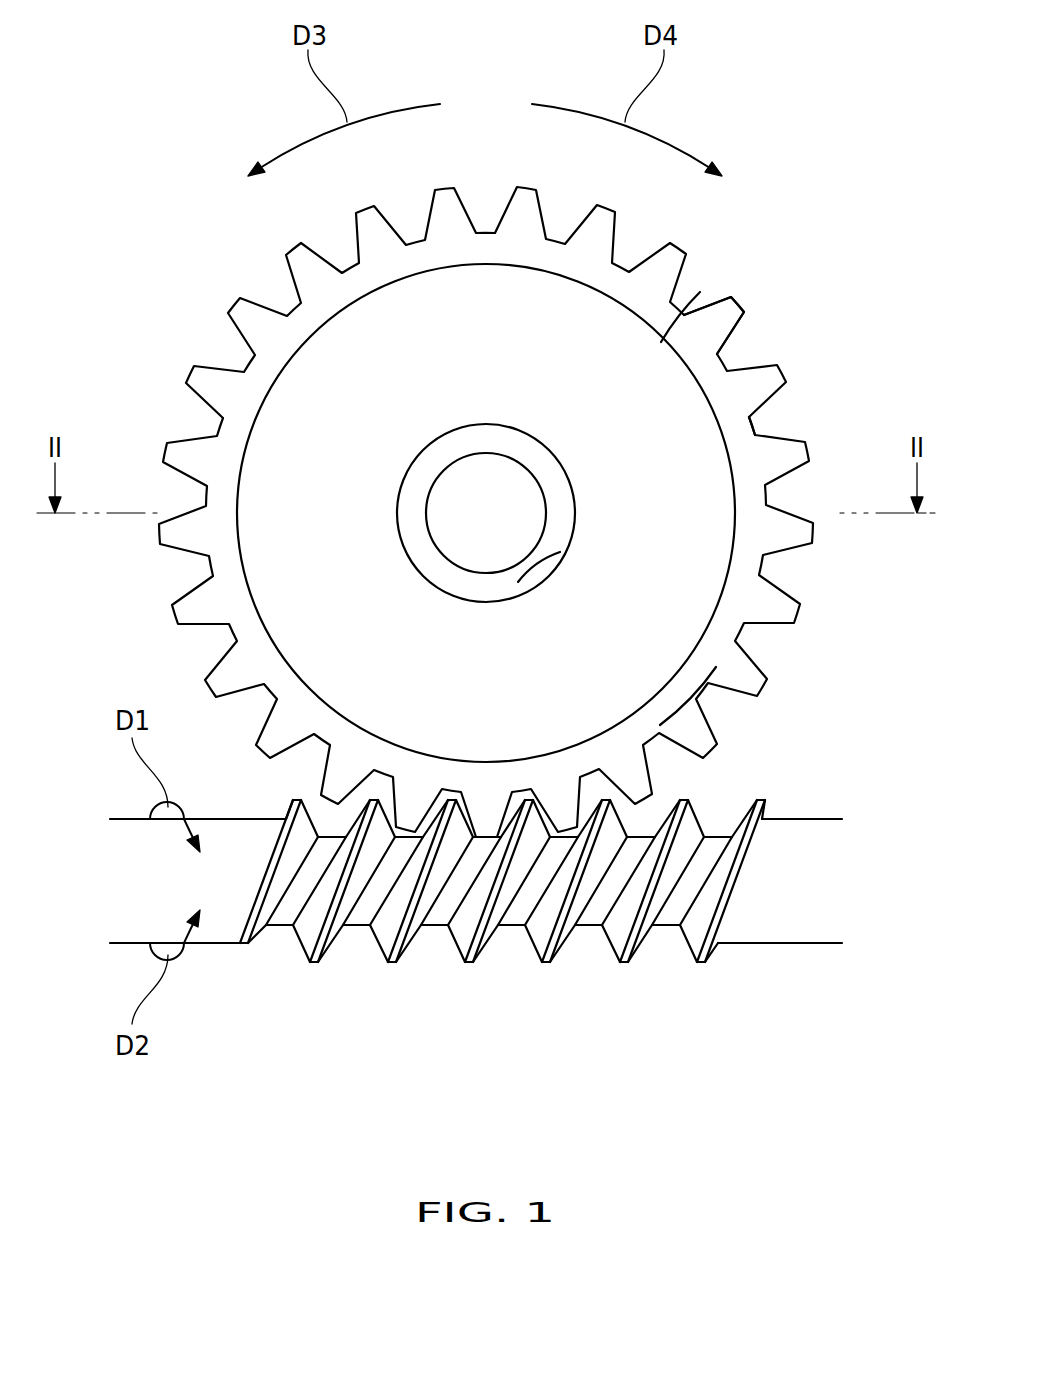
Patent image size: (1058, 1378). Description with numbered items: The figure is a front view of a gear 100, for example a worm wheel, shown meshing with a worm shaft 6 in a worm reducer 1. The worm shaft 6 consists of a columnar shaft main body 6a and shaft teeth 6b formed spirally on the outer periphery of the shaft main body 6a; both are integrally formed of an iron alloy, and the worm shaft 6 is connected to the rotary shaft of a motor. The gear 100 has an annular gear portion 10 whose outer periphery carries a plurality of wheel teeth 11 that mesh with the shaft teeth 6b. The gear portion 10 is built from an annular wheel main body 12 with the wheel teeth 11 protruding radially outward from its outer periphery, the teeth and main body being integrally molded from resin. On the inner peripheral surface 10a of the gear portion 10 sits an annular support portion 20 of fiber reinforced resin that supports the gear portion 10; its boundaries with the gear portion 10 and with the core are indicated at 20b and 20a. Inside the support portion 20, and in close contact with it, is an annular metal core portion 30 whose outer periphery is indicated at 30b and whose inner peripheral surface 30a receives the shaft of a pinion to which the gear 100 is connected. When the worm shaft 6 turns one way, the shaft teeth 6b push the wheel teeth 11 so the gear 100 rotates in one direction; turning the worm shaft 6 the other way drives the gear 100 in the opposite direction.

The worm reducer 1 is at (511, 531).
The gear 100 is at (536, 483).
The gear portion 10 is at (536, 513).
The inner peripheral surface of the gear portion 10a is at (666, 352).
The wheel teeth 11 is at (723, 323).
The wheel main body 12 is at (747, 430).
The support portion 20 is at (564, 513).
The inner end of web portion 20a is at (528, 568).
The outer end of web portion 20b is at (690, 663).
The core portion 30 is at (496, 364).
The inner peripheral surface of the core portion 30a is at (521, 480).
The outer peripheral surface of hub 30b is at (445, 433).
The worm shaft 6 is at (485, 931).
The shaft main body 6a is at (755, 927).
The shaft teeth 6b is at (635, 925).